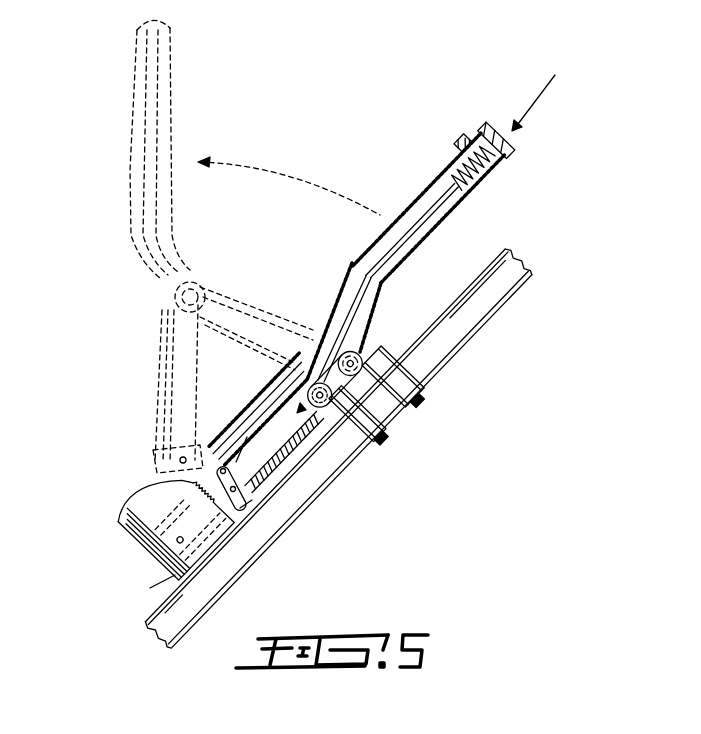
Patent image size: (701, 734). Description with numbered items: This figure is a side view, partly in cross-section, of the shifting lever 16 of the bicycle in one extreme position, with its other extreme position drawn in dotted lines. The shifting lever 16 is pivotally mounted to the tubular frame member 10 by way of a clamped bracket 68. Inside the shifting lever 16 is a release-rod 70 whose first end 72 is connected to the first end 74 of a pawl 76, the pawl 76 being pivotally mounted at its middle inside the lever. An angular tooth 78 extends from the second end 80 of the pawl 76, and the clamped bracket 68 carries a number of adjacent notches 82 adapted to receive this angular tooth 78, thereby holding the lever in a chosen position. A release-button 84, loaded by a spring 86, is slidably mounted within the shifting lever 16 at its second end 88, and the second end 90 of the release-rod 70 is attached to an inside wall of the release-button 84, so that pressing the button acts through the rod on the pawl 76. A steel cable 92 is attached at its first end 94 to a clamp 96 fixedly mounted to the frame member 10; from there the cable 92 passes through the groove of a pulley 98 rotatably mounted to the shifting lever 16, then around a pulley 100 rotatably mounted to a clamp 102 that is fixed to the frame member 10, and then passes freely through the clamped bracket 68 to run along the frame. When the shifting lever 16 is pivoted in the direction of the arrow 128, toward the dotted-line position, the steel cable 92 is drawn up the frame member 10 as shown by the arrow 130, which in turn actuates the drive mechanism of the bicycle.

The frame member 10 is at (327, 474).
The shifting lever 16 is at (398, 216).
The clamped bracket 68 is at (142, 520).
The release-rod 70 is at (299, 410).
The first end of release-rod 72 is at (247, 438).
The first end of pawl 74 is at (221, 465).
The pawl 76 is at (265, 473).
The angular tooth 78 is at (255, 505).
The second end of pawl 80 is at (245, 503).
The notches 82 is at (214, 496).
The release-button 84 is at (512, 148).
The spring 86 is at (486, 176).
The second end of shifting lever 88 is at (470, 148).
The second end of release-rod 90 is at (500, 140).
The steel cable 92 is at (330, 468).
The first end of cable 94 is at (358, 353).
The clamp 96 is at (420, 398).
The pulley 98 is at (358, 368).
The pulley 100 is at (318, 375).
The clamp 102 is at (370, 443).
The arrow 128 is at (285, 173).
The arrow 130 is at (158, 588).